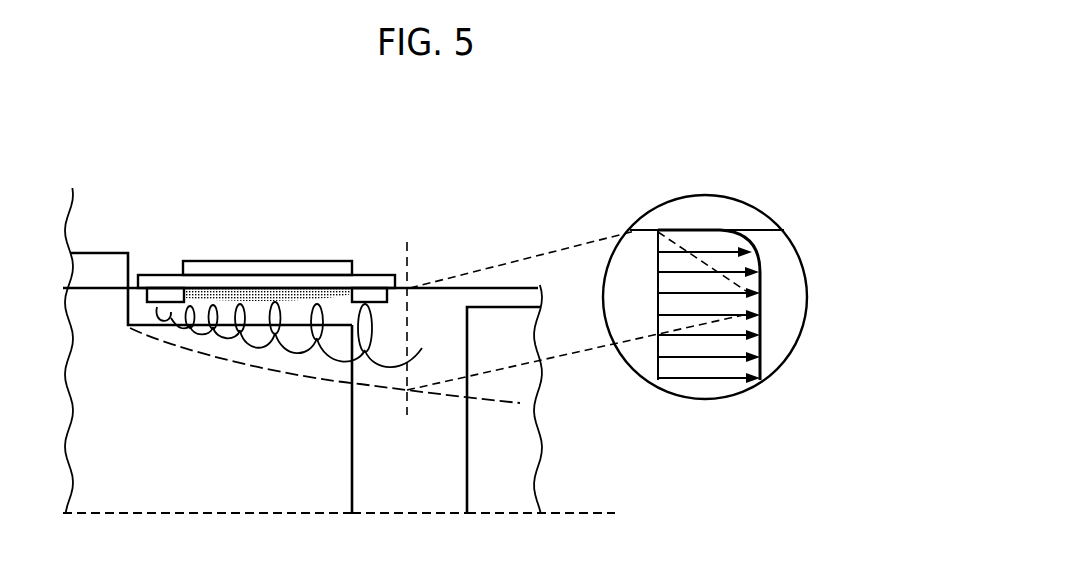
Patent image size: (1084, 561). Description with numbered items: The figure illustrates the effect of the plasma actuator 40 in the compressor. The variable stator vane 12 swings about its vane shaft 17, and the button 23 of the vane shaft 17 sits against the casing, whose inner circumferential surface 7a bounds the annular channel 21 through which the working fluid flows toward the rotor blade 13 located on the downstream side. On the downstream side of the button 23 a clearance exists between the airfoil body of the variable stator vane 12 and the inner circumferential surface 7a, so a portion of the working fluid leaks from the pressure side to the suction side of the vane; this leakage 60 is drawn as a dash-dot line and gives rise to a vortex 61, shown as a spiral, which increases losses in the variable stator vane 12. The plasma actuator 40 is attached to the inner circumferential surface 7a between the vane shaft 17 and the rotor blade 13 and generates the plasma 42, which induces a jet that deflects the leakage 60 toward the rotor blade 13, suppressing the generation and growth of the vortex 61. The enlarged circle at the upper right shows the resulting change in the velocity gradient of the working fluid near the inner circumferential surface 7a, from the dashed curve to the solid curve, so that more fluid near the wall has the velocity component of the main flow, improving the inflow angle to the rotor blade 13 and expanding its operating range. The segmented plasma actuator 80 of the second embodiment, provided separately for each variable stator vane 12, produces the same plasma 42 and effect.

The button 23 is at (93, 259).
The vane shaft 17 is at (230, 346).
The plasma actuator 40 is at (252, 246).
The plasma actuator 80 is at (266, 240).
The plasma 42 is at (304, 296).
The inner circumferential surface 7a is at (436, 292).
The vortex 61 is at (222, 337).
The leakage 60 is at (259, 369).
The variable stator vane 12 is at (139, 471).
The annular channel 21 is at (391, 471).
The rotor blade 13 is at (492, 471).